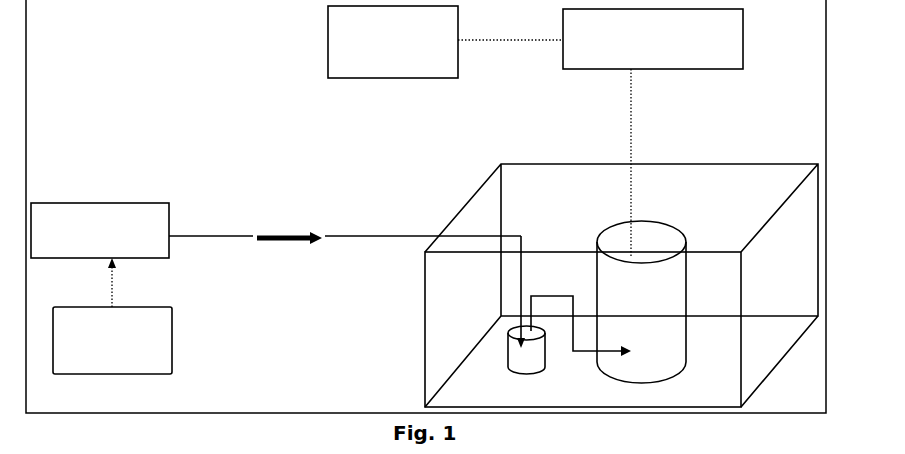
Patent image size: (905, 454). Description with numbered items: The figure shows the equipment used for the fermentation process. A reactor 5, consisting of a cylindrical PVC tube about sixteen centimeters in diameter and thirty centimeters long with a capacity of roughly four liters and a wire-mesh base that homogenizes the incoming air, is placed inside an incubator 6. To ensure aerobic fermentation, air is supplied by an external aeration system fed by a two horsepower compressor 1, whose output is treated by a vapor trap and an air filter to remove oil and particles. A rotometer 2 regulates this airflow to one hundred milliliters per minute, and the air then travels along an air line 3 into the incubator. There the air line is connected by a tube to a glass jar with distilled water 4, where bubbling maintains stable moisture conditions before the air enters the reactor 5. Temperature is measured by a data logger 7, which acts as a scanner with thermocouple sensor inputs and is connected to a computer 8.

The compressor 1 is at (112, 316).
The rotometer 2 is at (100, 230).
The air line 3 is at (345, 208).
The glass jar with distilled water 4 is at (526, 305).
The reactor 5 is at (608, 302).
The incubator 6 is at (621, 285).
The data logger 7 is at (653, 132).
The computer 8 is at (393, 42).